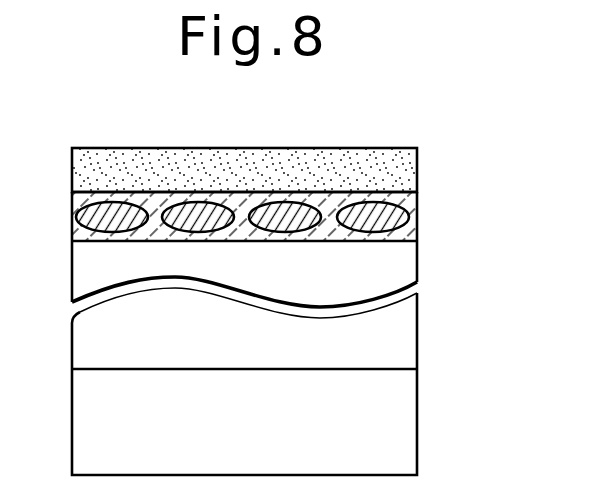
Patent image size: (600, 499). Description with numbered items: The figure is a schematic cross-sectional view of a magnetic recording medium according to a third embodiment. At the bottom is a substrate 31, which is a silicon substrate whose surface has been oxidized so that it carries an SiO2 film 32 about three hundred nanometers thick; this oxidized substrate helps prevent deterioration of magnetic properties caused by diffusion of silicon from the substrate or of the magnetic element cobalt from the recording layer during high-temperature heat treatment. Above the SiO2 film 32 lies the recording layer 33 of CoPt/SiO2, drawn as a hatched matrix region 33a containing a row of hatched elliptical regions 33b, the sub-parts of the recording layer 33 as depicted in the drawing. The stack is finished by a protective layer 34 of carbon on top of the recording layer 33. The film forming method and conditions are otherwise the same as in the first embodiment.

The substrate 31 is at (395, 418).
The SiO2 film 32 is at (400, 338).
The recording layer 33 is at (320, 211).
The matrix of composite layer 33a is at (398, 230).
The embedded particles of composite layer 33b is at (398, 204).
The protective layer 34 is at (400, 165).